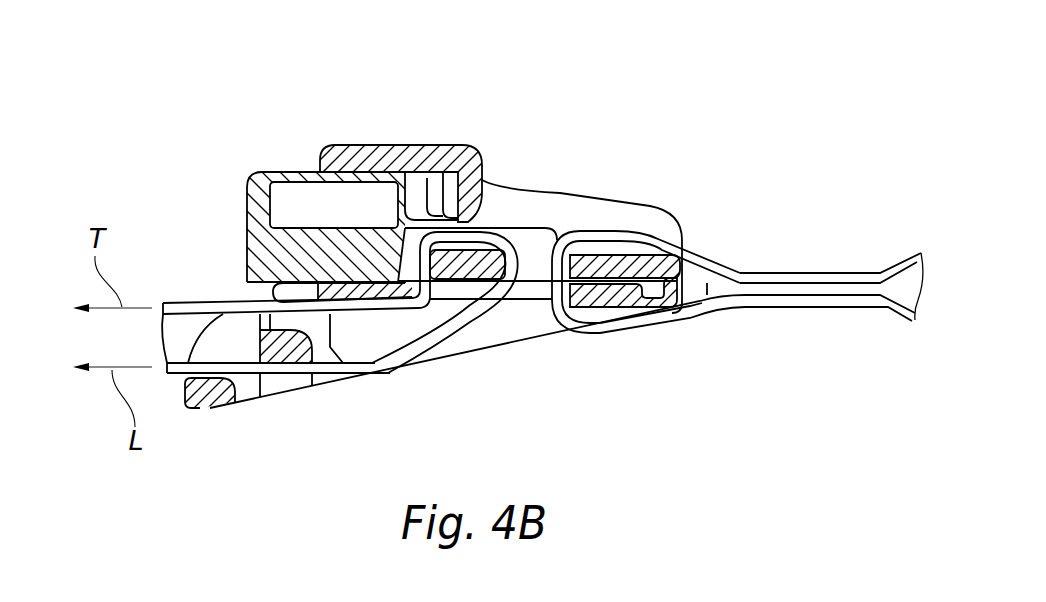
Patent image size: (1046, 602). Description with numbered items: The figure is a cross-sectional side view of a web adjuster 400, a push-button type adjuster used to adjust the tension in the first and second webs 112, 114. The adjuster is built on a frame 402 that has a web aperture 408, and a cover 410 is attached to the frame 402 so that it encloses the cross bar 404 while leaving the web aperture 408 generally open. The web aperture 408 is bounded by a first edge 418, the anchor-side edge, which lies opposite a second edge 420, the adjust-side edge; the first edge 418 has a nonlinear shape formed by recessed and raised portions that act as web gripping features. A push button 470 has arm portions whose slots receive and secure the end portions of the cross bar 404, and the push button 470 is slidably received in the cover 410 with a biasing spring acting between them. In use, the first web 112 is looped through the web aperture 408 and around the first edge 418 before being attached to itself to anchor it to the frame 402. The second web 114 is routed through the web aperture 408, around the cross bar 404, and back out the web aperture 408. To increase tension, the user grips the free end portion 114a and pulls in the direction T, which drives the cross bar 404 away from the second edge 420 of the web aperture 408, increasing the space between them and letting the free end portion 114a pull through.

The web adjuster 400 is at (240, 126).
The push button 470 is at (247, 188).
The cover 410 is at (585, 208).
The web aperture 408 is at (520, 300).
The cross bar 404 is at (463, 263).
The frame 402 is at (607, 300).
The free end portion 114a is at (181, 308).
The second web 114 is at (237, 367).
The second edge 420 is at (427, 300).
The first edge 418 is at (547, 296).
The first web 112 is at (822, 277).